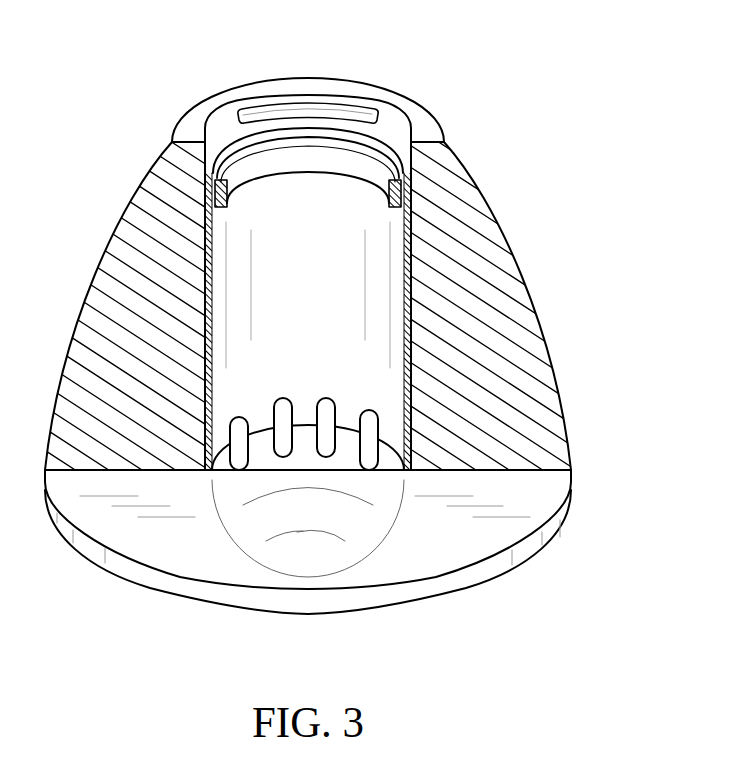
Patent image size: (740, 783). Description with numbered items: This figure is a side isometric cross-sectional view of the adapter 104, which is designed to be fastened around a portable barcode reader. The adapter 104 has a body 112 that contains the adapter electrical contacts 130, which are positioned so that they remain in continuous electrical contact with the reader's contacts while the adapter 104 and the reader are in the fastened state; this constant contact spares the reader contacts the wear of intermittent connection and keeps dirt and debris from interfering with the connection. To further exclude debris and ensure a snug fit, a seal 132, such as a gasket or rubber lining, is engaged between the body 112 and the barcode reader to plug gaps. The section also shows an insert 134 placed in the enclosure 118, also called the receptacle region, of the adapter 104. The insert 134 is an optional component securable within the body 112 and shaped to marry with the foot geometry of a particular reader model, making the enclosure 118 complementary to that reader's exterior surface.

The adapter 104 is at (407, 98).
The body 112 is at (525, 300).
The enclosure 118 is at (364, 96).
The adapter electrical contacts 130 is at (367, 447).
The seal 132 is at (272, 123).
The insert 134 is at (242, 157).